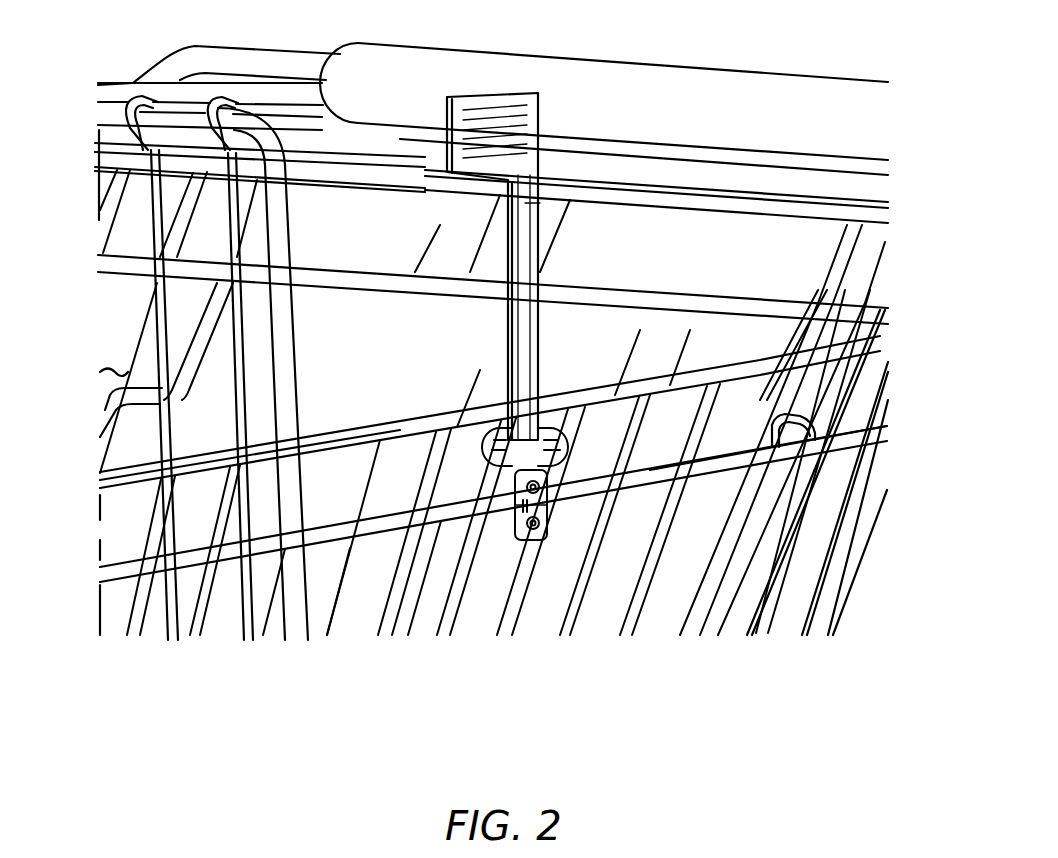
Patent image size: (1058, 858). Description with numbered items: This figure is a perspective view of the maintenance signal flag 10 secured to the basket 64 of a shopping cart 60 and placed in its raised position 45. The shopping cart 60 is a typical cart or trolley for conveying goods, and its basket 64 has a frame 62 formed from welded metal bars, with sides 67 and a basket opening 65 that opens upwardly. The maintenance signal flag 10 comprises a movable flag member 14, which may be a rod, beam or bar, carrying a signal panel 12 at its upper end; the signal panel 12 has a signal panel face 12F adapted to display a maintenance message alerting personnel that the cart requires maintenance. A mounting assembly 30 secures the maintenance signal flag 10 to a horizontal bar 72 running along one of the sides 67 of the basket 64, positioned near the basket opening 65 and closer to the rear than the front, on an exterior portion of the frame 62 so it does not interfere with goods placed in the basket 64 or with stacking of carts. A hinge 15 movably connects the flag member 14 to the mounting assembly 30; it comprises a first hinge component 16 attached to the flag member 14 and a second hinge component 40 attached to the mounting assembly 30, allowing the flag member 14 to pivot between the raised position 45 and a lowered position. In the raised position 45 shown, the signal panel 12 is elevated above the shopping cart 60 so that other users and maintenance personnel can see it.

The maintenance signal flag 10 is at (570, 266).
The signal panel 12 is at (538, 128).
The signal panel face 12F is at (540, 100).
The flag member 14 is at (530, 203).
The hinge 15 is at (513, 510).
The first hinge component 16 is at (525, 443).
The mounting assembly 30 is at (547, 500).
The second hinge component 40 is at (568, 447).
The raised position 45 is at (474, 236).
The shopping cart 60 is at (590, 672).
The frame 62 is at (655, 568).
The basket 64 is at (100, 482).
The basket opening 65 is at (420, 417).
The sides 67 is at (364, 590).
The horizontal bar 72 is at (873, 440).